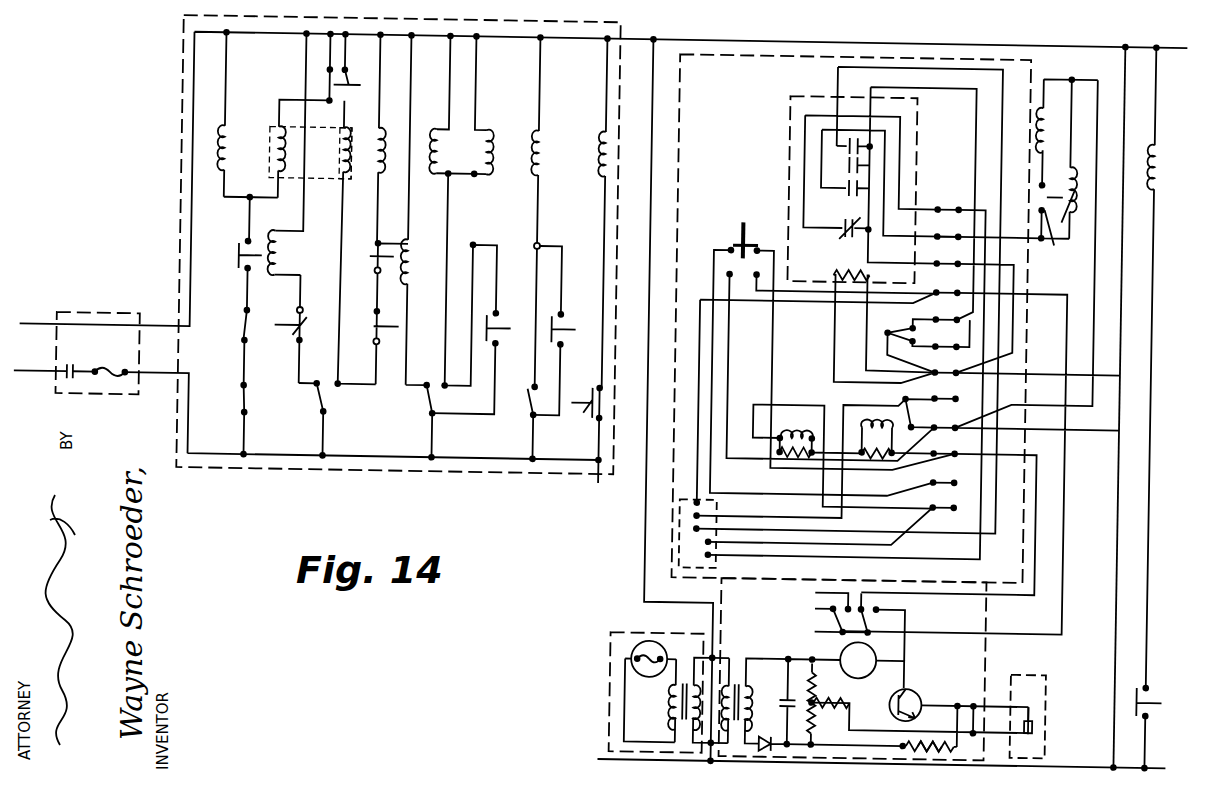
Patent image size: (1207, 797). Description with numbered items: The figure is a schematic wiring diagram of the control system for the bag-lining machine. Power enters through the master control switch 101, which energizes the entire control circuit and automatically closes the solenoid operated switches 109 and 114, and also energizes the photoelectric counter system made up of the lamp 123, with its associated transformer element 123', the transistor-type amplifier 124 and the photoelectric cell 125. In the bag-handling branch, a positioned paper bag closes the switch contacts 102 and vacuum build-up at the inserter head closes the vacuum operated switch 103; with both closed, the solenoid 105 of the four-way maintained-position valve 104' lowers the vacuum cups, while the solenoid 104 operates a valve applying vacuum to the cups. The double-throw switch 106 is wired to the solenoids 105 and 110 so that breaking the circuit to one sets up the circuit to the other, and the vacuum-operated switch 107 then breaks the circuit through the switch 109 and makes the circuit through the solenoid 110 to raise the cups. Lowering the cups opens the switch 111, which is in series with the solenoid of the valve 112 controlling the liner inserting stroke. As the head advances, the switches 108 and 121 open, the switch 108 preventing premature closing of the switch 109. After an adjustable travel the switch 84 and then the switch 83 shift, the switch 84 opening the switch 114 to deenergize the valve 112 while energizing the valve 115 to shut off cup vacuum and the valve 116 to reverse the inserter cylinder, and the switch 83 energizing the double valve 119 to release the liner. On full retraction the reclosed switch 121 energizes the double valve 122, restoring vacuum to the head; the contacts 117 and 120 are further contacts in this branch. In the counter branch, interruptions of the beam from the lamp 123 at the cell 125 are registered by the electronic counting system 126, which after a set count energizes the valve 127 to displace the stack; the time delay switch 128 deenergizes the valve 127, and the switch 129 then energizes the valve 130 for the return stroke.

The master control switch 101 is at (81, 364).
The switch contacts 102 is at (255, 396).
The vacuum operated switch 103 is at (275, 305).
The solenoid 104 is at (207, 112).
The four-way maintained-position air-pilot-controlled valve 104' is at (307, 128).
The solenoid 105 is at (280, 146).
The double-throw switch 106 is at (346, 72).
The vacuum-operated switch 107 is at (335, 392).
The switch 108 is at (303, 325).
The solenoid operated switch 109 is at (257, 238).
The solenoid of valve 110 is at (343, 155).
The switch 111 is at (379, 320).
The valve 112 is at (381, 132).
The solenoid operated switch 114 is at (386, 246).
The valve 115 is at (437, 129).
The valve 116 is at (492, 127).
The switch contact 117 is at (502, 302).
The double valve 119 is at (548, 149).
The switch contact 120 is at (567, 303).
The switch 121 is at (592, 391).
The double valve 122 is at (608, 122).
The switch 83 is at (533, 391).
The switch 84 is at (440, 376).
The lamp 123 is at (653, 679).
The transformer 123' is at (665, 699).
The transistor-type amplifier 124 is at (1005, 638).
The photoelectric cell 125 is at (1047, 713).
The electronic counting system 126 is at (759, 35).
The valve 127 is at (1049, 95).
The time delay switch 128 is at (1066, 212).
The switch 129 is at (1176, 669).
The valve 130 is at (1160, 149).